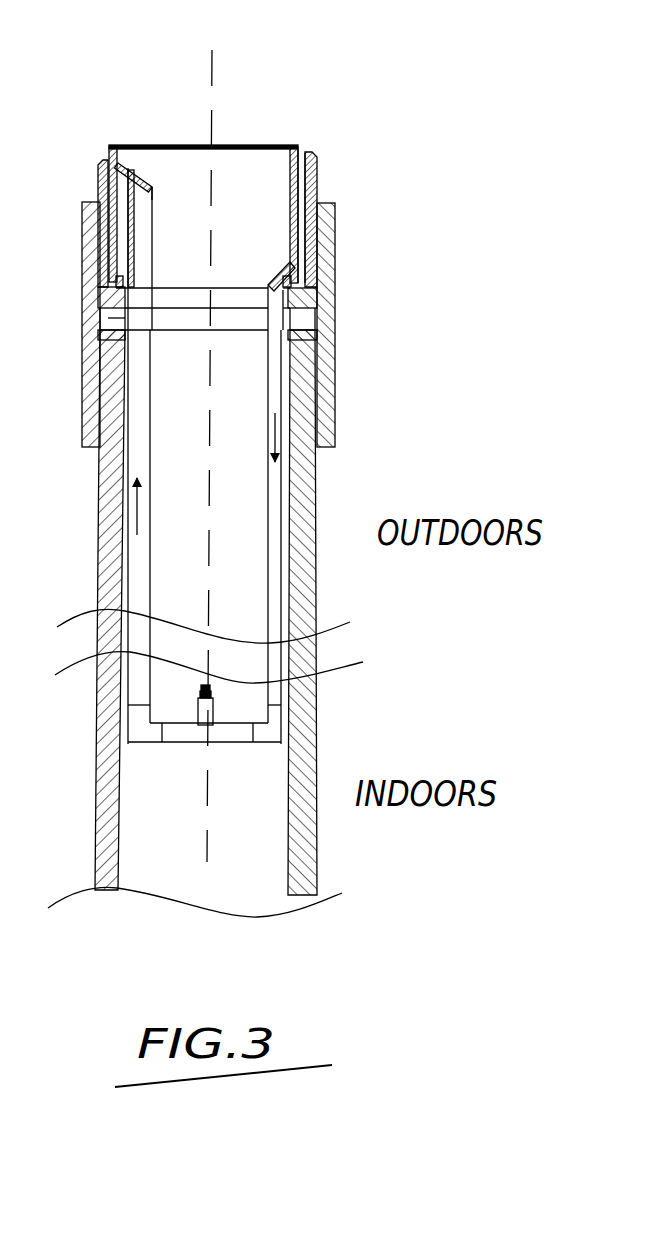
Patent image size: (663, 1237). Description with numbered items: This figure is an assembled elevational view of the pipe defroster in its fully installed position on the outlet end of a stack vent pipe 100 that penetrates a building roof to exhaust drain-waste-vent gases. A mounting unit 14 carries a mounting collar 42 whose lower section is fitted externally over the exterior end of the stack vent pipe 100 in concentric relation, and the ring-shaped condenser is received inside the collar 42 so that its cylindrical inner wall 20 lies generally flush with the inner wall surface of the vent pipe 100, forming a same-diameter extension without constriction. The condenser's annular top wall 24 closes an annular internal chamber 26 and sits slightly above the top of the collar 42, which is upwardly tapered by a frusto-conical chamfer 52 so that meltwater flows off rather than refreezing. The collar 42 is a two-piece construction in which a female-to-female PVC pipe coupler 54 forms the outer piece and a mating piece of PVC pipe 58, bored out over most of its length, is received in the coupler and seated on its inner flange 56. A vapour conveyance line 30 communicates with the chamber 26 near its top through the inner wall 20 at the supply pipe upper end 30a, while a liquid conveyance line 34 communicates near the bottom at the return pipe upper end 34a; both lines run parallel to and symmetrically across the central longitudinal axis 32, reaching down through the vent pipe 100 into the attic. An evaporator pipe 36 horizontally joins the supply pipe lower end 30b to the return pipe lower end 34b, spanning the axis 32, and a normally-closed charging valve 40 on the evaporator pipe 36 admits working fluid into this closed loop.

The mounting unit 14 is at (352, 281).
The cylindrical inner wall 20 is at (293, 167).
The annular top wall 24 is at (297, 147).
The annular internal chamber 26 is at (300, 196).
The vapour conveyance line 30 is at (142, 416).
The supply pipe upper end 30a is at (144, 173).
The supply pipe lower end 30b is at (143, 733).
The central longitudinal axis 32 is at (223, 74).
The liquid conveyance line 34 is at (274, 500).
The return pipe upper end 34a is at (292, 267).
The return pipe lower end 34b is at (270, 735).
The evaporator pipe 36 is at (169, 735).
The charging valve 40 is at (211, 713).
The mounting collar 42 is at (341, 382).
The frusto-conical chamfer 52 is at (314, 157).
The PVC pipe coupler 54 is at (310, 329).
The inner flange 56 is at (110, 320).
The mating piece of PVC pipe 58 is at (318, 192).
The stack vent pipe 100 is at (312, 494).